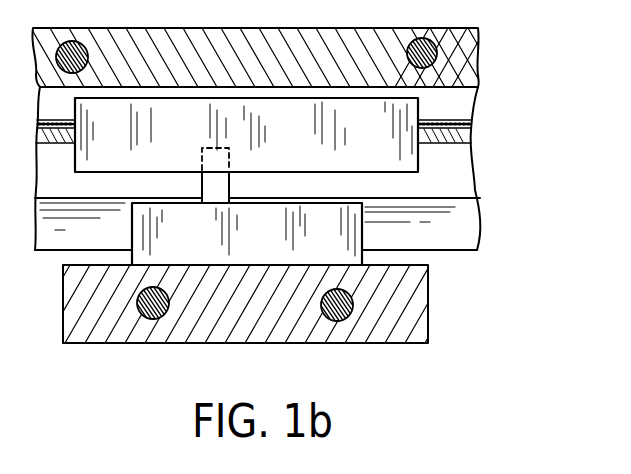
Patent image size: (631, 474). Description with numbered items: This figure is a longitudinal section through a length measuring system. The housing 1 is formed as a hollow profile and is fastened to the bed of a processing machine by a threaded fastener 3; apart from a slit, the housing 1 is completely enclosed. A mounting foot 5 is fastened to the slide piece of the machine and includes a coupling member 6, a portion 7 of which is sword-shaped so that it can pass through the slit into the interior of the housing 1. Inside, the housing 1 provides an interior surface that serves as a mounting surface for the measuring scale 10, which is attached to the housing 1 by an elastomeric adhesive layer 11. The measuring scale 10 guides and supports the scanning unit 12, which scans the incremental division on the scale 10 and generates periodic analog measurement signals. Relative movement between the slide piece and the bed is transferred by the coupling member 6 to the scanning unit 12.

The housing 1 is at (257, 43).
The threaded fastener 3 is at (437, 57).
The mounting foot 5 is at (367, 333).
The coupling member 6 is at (213, 196).
The sword-shaped portion 7 is at (348, 233).
The measuring scale 10 is at (36, 135).
The elastomeric adhesive layer 11 is at (453, 118).
The scanning unit 12 is at (403, 152).